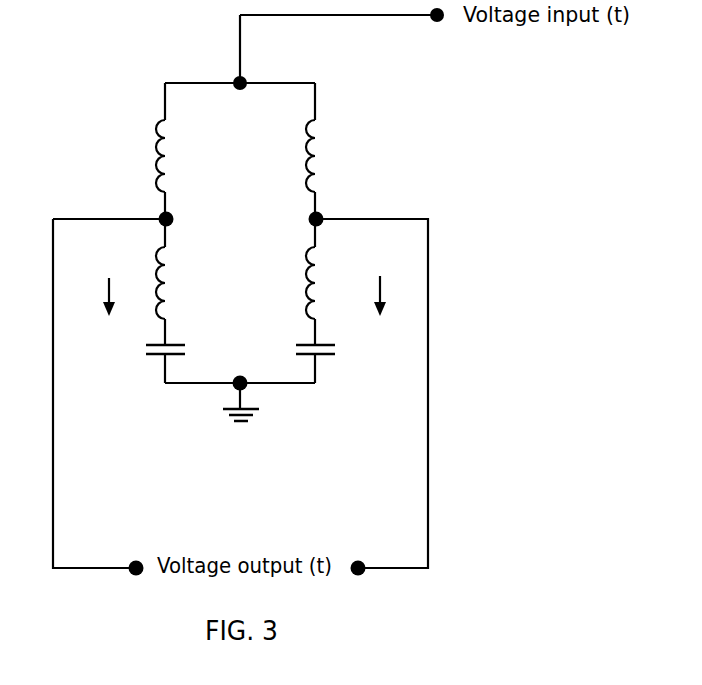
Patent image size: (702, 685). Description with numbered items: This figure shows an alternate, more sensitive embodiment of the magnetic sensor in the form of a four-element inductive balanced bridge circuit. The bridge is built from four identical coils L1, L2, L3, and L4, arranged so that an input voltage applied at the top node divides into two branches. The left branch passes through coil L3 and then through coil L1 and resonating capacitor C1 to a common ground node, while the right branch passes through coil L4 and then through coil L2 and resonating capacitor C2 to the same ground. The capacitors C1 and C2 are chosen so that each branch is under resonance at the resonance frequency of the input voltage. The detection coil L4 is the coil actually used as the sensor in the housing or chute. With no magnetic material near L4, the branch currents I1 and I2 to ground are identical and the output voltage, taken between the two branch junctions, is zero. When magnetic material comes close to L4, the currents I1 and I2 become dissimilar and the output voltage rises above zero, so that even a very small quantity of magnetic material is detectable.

The coil L1 is at (178, 283).
The coil L2 is at (326, 283).
The coil L3 is at (131, 156).
The detection coil L4 is at (331, 156).
The resonating capacitor C1 is at (184, 354).
The resonating capacitor C2 is at (334, 354).
The branch current I1 is at (98, 296).
The branch current I2 is at (391, 296).